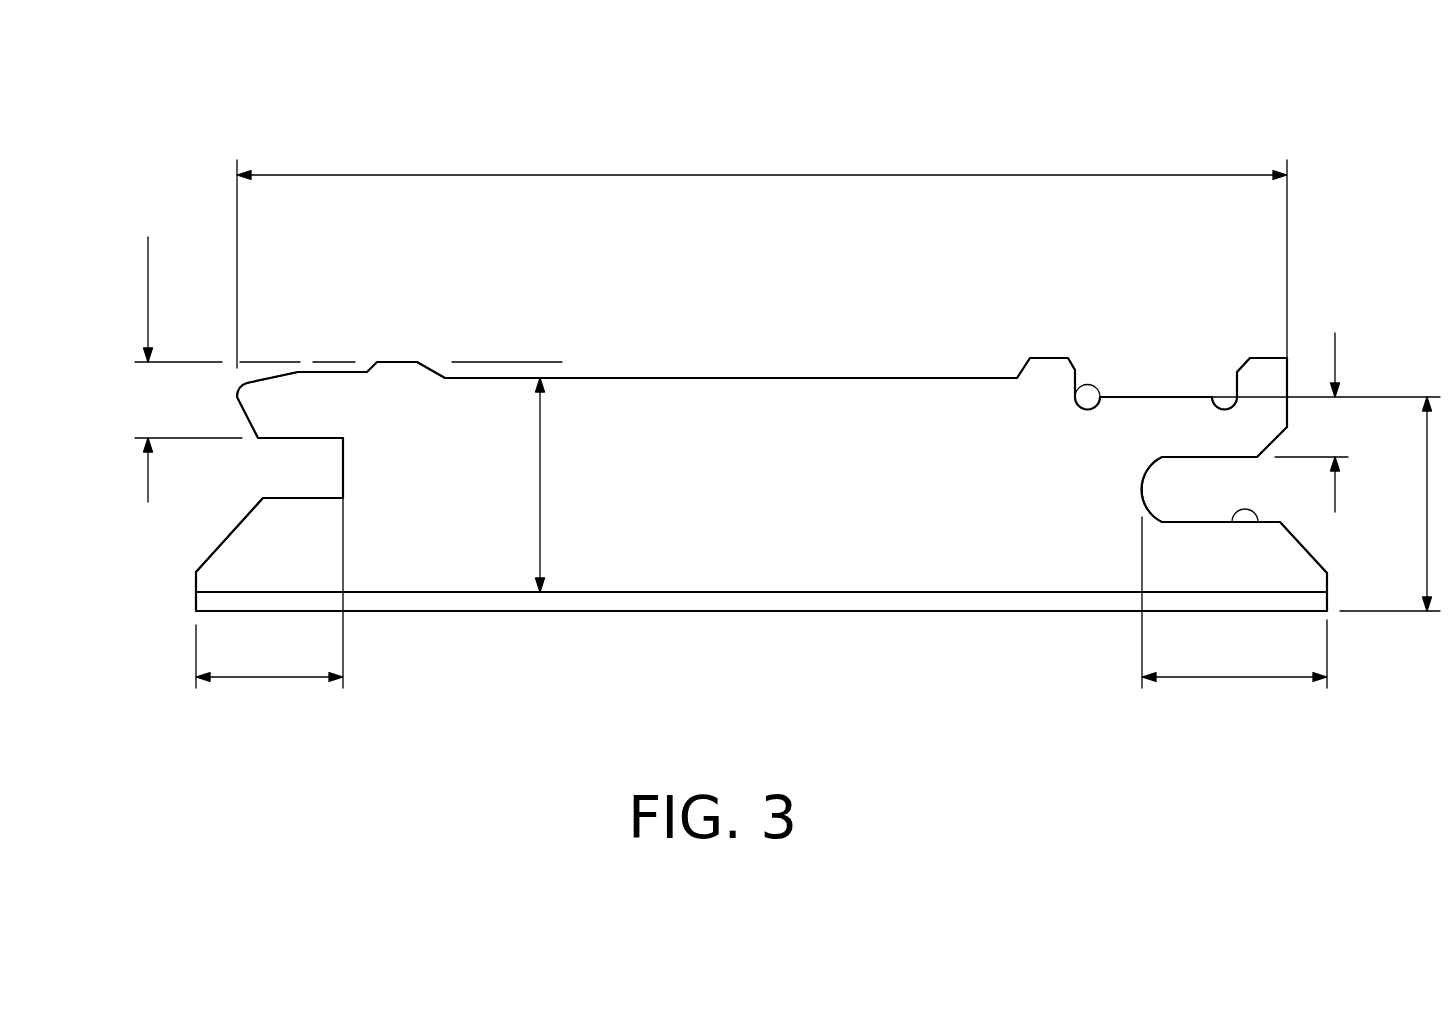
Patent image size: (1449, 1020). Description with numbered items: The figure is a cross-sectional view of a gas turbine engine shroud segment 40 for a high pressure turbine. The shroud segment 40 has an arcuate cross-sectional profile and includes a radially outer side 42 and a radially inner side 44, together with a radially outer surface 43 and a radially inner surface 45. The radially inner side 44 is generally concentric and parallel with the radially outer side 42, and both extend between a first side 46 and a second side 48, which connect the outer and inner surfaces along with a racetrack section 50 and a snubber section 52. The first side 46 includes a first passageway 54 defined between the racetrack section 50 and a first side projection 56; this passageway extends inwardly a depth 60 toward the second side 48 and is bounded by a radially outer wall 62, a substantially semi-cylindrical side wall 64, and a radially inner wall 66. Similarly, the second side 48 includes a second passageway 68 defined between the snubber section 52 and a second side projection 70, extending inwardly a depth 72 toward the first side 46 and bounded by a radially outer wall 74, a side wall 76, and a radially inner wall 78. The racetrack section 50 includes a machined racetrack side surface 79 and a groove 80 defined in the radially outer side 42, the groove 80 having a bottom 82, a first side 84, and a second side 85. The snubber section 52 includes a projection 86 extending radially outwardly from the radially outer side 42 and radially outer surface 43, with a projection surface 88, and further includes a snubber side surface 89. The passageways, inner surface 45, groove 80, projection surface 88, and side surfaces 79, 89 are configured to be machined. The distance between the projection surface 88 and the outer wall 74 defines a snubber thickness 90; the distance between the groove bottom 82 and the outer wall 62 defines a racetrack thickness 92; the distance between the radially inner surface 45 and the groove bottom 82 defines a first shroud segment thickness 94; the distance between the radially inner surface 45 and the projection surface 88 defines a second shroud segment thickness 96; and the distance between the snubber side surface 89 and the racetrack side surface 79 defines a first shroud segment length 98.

The shroud segment 40 is at (836, 503).
The radially outer side 42 is at (824, 365).
The radially outer surface 43 is at (915, 377).
The radially inner side 44 is at (1034, 626).
The radially inner surface 45 is at (915, 612).
The first side 46 is at (1362, 484).
The second side 48 is at (208, 517).
The racetrack section 50 is at (1124, 390).
The snubber section 52 is at (317, 405).
The first passageway 54 is at (1165, 497).
The first side projection 56 is at (1308, 577).
The depth 60 is at (1225, 677).
The radially outer wall 62 is at (1215, 458).
The side wall 64 is at (1143, 481).
The radially inner wall 66 is at (1232, 522).
The second passageway 68 is at (288, 473).
The second side projection 70 is at (205, 584).
The depth 72 is at (268, 677).
The radially outer wall 74 is at (265, 440).
The side wall 76 is at (342, 450).
The radially inner wall 78 is at (292, 500).
The racetrack side surface 79 is at (1296, 373).
The groove 80 is at (1230, 348).
The groove bottom 82 is at (1142, 397).
The first side of groove 84 is at (232, 390).
The notch 85 is at (1228, 395).
The projection 86 is at (437, 350).
The projection surface 88 is at (392, 362).
The snubber side surface 89 is at (1085, 393).
The snubber thickness 90 is at (148, 307).
The racetrack thickness 92 is at (1335, 355).
The first shroud segment thickness 94 is at (1427, 553).
The second shroud segment thickness 96 is at (541, 505).
The first shroud segment length 98 is at (868, 174).